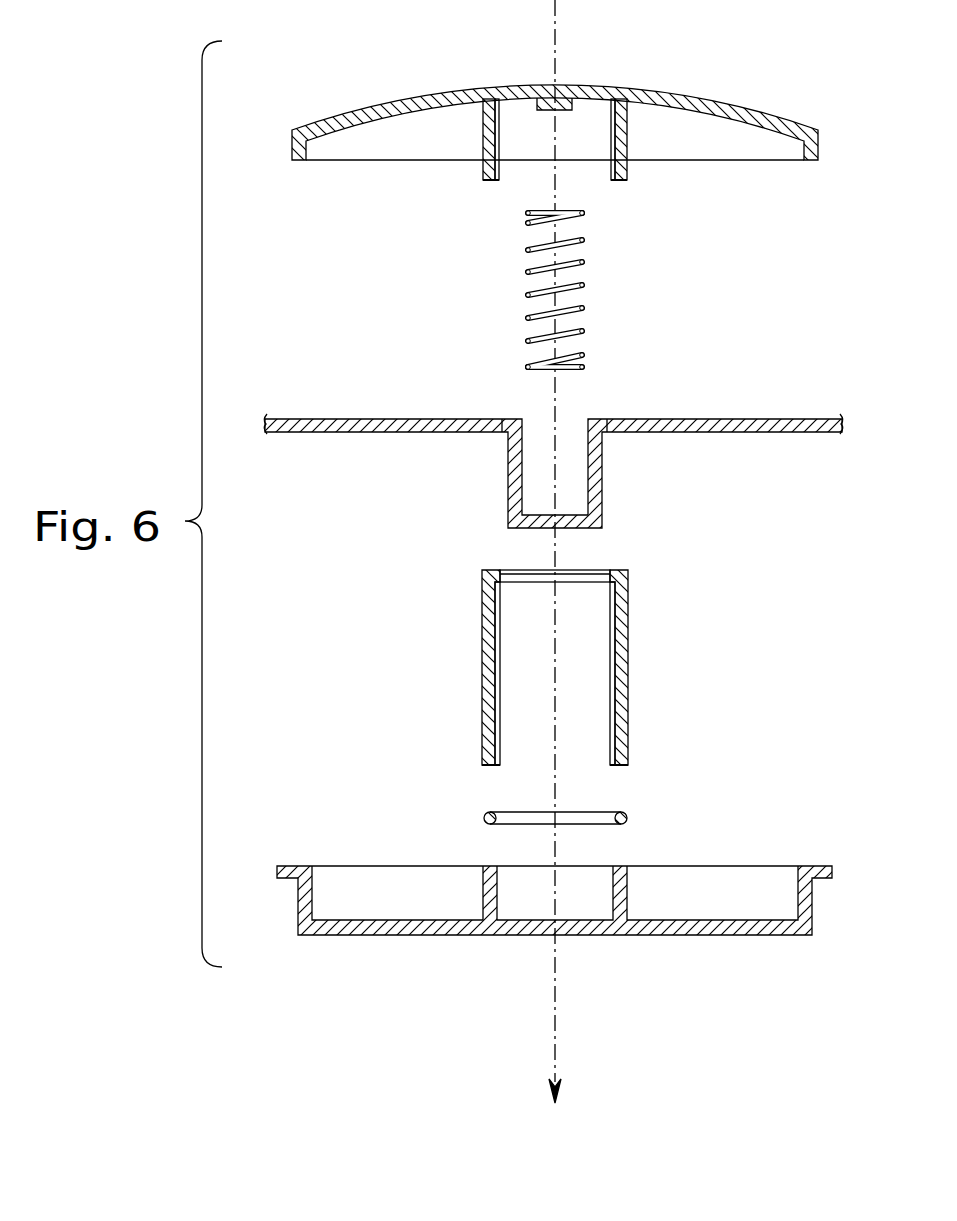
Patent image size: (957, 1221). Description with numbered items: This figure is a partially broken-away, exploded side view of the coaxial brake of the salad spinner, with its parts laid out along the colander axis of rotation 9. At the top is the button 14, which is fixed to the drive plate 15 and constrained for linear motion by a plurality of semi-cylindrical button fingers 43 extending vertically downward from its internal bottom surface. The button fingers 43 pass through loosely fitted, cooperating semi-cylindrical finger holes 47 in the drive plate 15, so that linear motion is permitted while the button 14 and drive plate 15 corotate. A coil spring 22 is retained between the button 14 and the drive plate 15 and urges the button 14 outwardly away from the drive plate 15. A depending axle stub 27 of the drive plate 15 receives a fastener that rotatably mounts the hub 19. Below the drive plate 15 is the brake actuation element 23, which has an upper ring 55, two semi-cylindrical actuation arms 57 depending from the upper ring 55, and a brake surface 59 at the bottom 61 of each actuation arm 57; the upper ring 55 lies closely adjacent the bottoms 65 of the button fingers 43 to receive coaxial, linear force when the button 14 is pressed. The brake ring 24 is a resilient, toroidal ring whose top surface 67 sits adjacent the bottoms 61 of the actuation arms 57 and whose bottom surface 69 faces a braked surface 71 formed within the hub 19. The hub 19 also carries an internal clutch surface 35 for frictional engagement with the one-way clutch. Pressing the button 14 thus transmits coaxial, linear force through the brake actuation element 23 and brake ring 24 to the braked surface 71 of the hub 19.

The colander axis of rotation 9 is at (556, 967).
The button 14 is at (778, 120).
The drive plate 15 is at (753, 419).
The hub 19 is at (812, 908).
The coil spring 22 is at (583, 283).
The brake actuation element 23 is at (556, 653).
The brake ring 24 is at (555, 832).
The depending axle stub 27 is at (603, 468).
The internal clutch surface 35 is at (798, 888).
The button fingers 43 is at (483, 128).
The finger holes 47 is at (498, 419).
The upper ring 55 is at (609, 572).
The actuation arms 57 is at (485, 636).
The brake surface 59 is at (488, 768).
The bottom of actuation arm 61 is at (485, 742).
The bottoms of button fingers 65 is at (490, 181).
The top surface of brake ring 67 is at (492, 810).
The bottom surface of brake ring 69 is at (565, 826).
The braked surface 71 is at (627, 866).